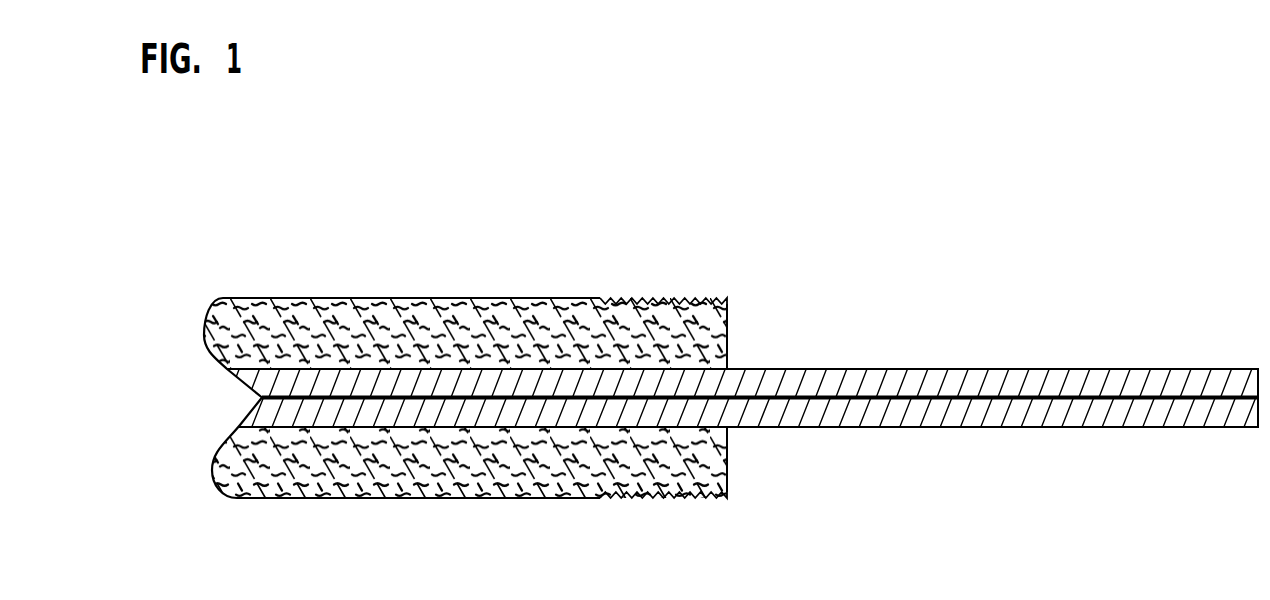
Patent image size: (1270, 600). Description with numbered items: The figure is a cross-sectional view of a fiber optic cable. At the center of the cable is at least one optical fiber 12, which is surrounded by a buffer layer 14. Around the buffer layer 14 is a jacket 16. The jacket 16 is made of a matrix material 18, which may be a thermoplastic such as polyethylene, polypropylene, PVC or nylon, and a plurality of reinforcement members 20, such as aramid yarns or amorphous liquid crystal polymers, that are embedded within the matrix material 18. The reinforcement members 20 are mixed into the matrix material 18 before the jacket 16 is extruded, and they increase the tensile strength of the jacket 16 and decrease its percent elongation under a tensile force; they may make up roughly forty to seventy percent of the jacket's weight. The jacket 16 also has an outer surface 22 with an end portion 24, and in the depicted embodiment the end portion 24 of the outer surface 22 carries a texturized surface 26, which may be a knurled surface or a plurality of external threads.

The optical fiber 12 is at (983, 398).
The buffer layer 14 is at (988, 427).
The jacket 16 is at (528, 298).
The matrix material 18 is at (215, 328).
The reinforcement members 20 is at (382, 305).
The outer surface 22 is at (380, 498).
The end portion 24 is at (702, 510).
The texturized surface 26 is at (687, 305).